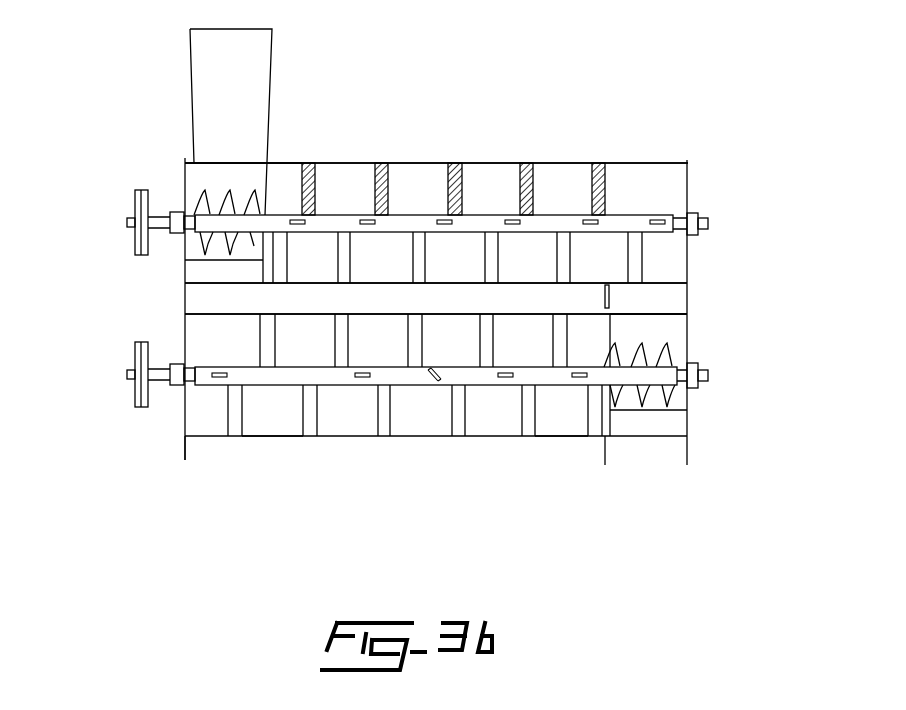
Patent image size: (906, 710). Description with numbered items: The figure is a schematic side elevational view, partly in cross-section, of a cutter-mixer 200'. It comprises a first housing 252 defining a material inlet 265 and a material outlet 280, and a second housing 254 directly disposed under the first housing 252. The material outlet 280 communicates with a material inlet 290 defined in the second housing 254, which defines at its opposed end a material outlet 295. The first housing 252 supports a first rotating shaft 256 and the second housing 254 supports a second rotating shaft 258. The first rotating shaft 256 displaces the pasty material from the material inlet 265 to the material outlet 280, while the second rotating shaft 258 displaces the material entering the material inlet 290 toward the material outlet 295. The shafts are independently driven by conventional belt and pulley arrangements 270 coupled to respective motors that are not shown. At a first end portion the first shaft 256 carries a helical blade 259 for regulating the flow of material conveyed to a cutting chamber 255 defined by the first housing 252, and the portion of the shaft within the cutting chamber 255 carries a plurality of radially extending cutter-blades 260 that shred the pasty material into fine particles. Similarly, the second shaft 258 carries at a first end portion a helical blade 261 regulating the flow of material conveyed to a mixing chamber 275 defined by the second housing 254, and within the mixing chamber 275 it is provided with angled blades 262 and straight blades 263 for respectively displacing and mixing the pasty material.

The cutter-mixer 200' is at (499, 290).
The first housing 252 is at (497, 163).
The second housing 254 is at (570, 438).
The cutting chamber 255 is at (285, 173).
The first rotating shaft 256 is at (400, 220).
The second rotating shaft 258 is at (405, 377).
The helical blade 259 is at (197, 202).
The cutter-blades 260 is at (605, 193).
The helical blade 261 is at (655, 397).
The angled blades 262 is at (440, 376).
The straight blades 263 is at (372, 367).
The material inlet 265 is at (210, 112).
The belt and pulley arrangements 270 is at (140, 346).
The mixing chamber 275 is at (353, 418).
The material outlet 280 is at (668, 302).
The material inlet 290 is at (667, 330).
The material outlet 295 is at (220, 447).